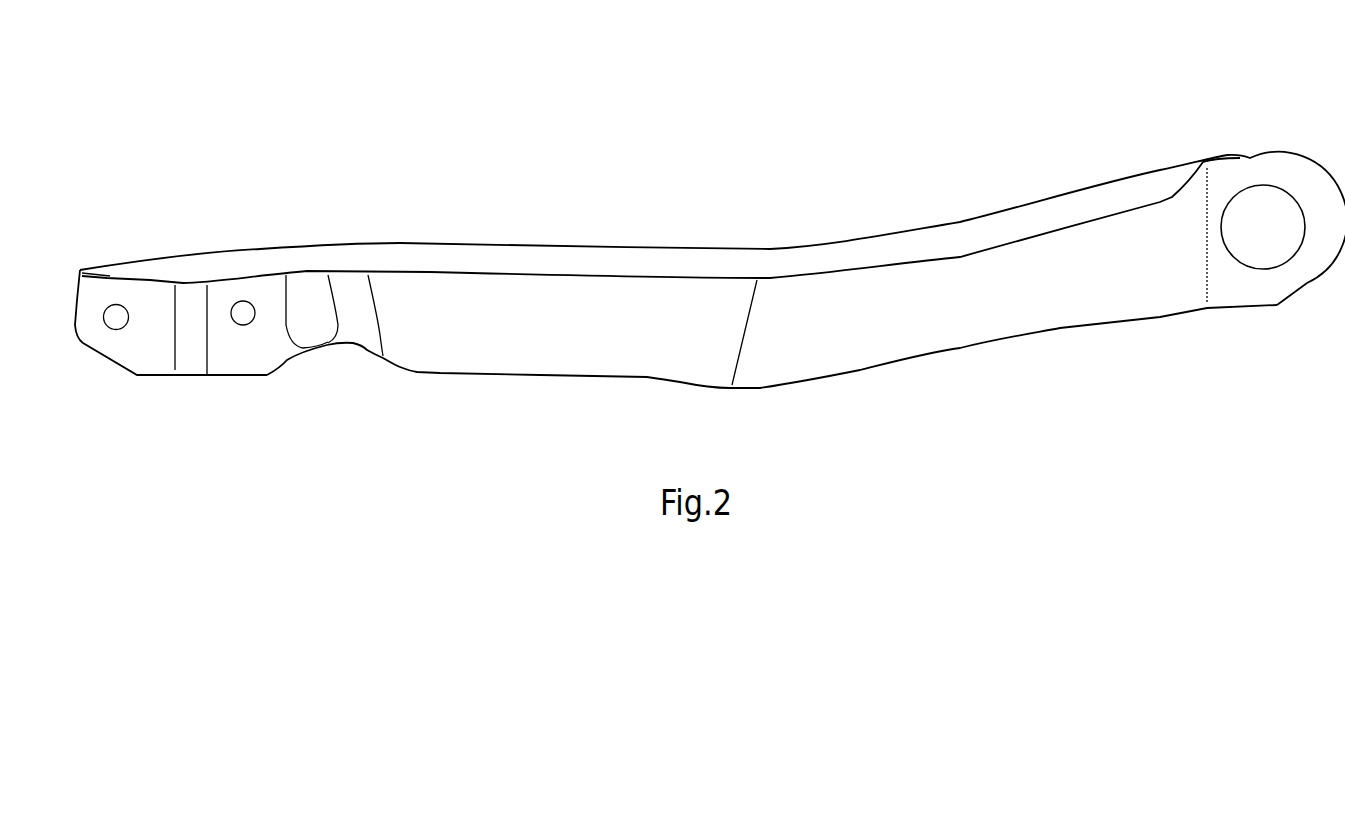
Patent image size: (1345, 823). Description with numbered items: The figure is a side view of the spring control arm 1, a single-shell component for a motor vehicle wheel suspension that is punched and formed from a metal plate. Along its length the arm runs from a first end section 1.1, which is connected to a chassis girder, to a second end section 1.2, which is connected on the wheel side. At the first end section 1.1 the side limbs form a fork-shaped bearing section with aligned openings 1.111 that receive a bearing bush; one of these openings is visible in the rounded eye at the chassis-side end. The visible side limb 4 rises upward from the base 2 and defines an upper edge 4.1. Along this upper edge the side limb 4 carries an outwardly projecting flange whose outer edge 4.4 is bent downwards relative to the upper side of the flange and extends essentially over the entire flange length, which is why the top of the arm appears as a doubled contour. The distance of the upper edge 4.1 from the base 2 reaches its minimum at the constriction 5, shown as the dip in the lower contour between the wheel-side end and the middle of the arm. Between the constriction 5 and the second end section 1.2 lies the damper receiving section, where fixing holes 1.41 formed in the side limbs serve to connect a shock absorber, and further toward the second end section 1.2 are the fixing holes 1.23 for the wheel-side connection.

The spring control arm 1 is at (692, 239).
The first end section 1.1 is at (1265, 173).
The aligned openings 1.111 is at (1263, 228).
The second end section 1.2 is at (103, 290).
The fixing holes 1.23 is at (116, 318).
The fixing holes 1.41 is at (243, 314).
The base 2 is at (540, 376).
The side limb 4 is at (468, 300).
The upper edge 4.1 is at (342, 242).
The outer edge 4.4 is at (617, 263).
The constriction 5 is at (342, 372).